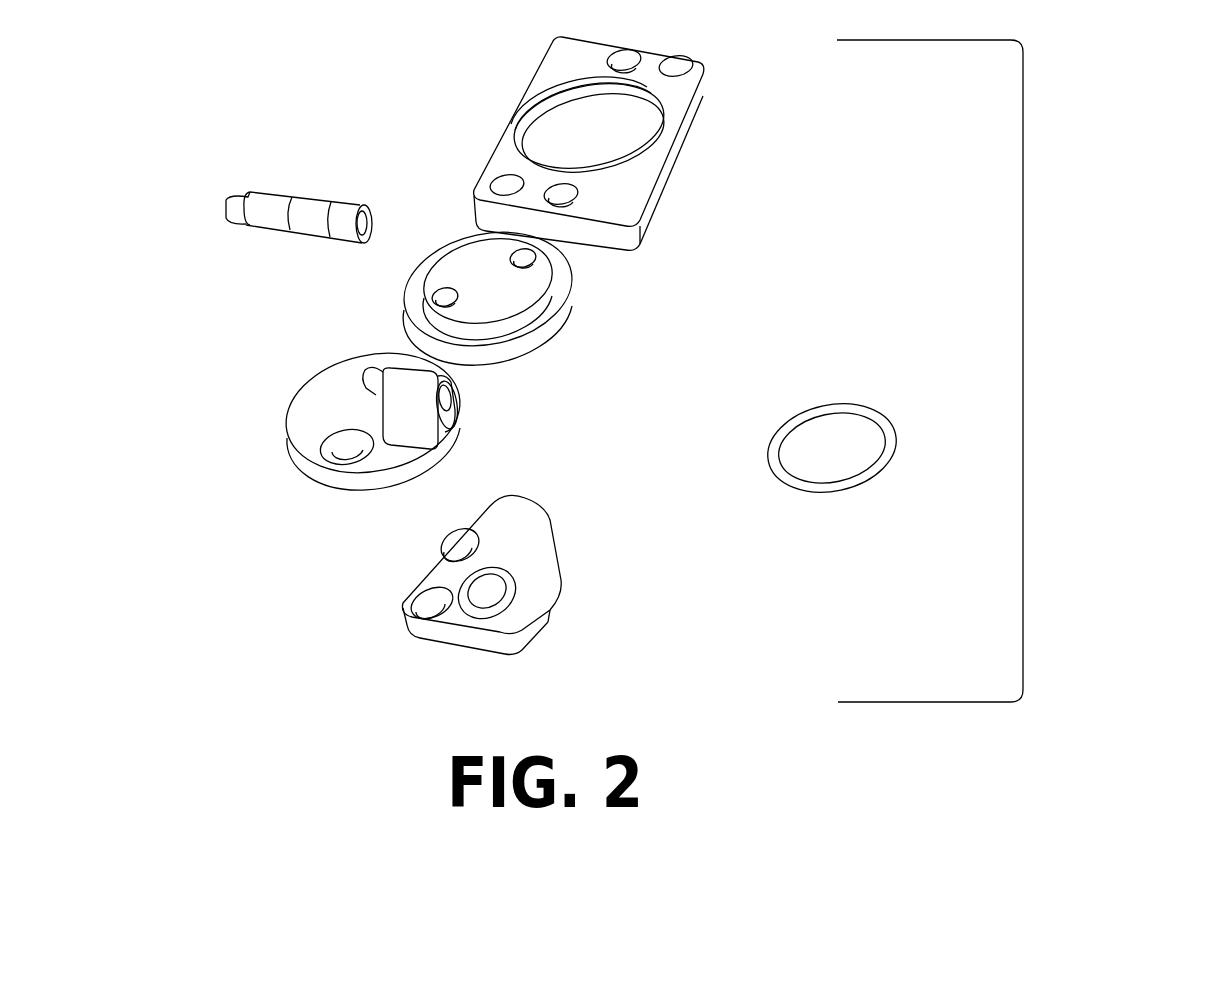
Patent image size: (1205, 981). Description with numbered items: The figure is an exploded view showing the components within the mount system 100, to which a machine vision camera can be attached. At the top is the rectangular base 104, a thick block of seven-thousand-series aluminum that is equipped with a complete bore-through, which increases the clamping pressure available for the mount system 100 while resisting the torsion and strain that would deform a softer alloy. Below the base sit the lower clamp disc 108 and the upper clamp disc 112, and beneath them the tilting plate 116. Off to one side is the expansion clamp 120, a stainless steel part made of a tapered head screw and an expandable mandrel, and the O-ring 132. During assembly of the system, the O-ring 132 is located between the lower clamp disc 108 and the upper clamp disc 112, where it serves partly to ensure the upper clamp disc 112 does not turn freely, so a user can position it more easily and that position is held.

The mount system 100 is at (1023, 340).
The rectangular base 104 is at (681, 144).
The lower clamp disc 108 is at (580, 292).
The upper clamp disc 112 is at (474, 414).
The tilting plate 116 is at (550, 574).
The expansion clamp 120 is at (277, 205).
The O-ring 132 is at (831, 457).